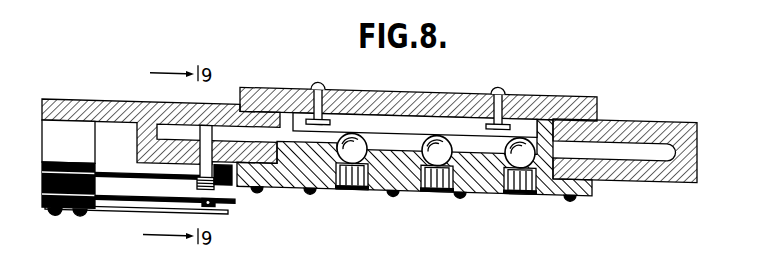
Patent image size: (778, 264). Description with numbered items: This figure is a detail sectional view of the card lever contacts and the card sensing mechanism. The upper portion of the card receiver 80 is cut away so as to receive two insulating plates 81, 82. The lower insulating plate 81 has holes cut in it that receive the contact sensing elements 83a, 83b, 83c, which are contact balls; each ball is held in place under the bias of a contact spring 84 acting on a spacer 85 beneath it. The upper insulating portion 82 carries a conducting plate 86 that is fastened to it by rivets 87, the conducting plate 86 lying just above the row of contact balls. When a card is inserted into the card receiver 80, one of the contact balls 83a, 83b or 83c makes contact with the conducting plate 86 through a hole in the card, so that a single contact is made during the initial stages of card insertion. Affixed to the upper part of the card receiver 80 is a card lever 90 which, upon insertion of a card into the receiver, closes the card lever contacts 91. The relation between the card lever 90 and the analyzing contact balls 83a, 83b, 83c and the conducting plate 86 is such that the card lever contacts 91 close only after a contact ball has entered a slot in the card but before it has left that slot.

The card receiver 80 is at (87, 98).
The insulating plate 81 is at (552, 183).
The insulating plate 82 is at (593, 82).
The contact sensing element 83a is at (350, 135).
The contact sensing element 83b is at (440, 132).
The contact sensing element 83c is at (522, 128).
The contact spring 84 is at (343, 182).
The spacer 85 is at (428, 186).
The conducting plate 86 is at (403, 115).
The rivet 87 is at (316, 76).
The card lever 90 is at (199, 179).
The card lever contacts 91 is at (216, 199).